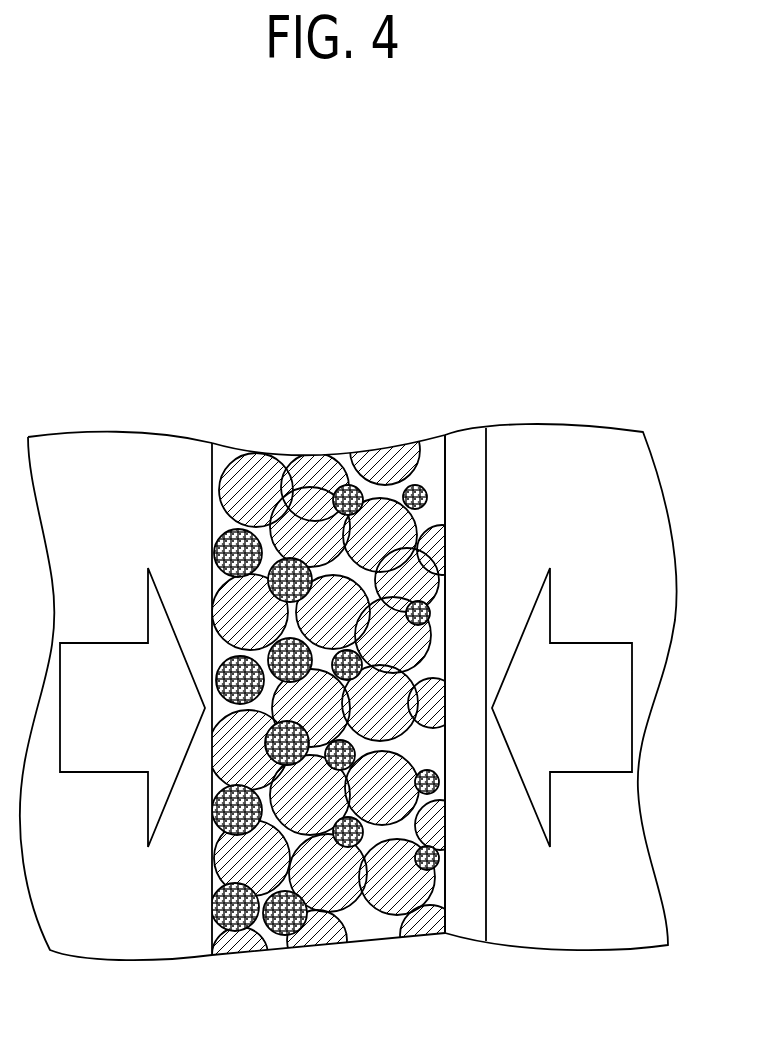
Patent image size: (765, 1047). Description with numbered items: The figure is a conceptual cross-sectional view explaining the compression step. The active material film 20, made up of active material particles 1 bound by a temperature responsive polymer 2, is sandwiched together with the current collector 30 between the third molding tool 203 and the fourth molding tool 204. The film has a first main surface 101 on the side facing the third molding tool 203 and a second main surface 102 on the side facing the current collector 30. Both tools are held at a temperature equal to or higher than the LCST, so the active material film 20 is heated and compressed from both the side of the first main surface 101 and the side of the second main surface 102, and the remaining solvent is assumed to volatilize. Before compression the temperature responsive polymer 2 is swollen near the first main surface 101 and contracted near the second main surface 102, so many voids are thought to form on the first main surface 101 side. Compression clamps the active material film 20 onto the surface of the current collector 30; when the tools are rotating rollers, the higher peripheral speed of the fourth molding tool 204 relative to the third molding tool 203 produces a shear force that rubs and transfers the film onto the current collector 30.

The active material particles 1 is at (366, 905).
The temperature responsive polymer 2 is at (234, 917).
The active material film 20 is at (338, 697).
The current collector 30 is at (461, 925).
The first main surface 101 is at (245, 452).
The second main surface 102 is at (405, 448).
The third molding tool 203 is at (130, 942).
The fourth molding tool 204 is at (575, 940).